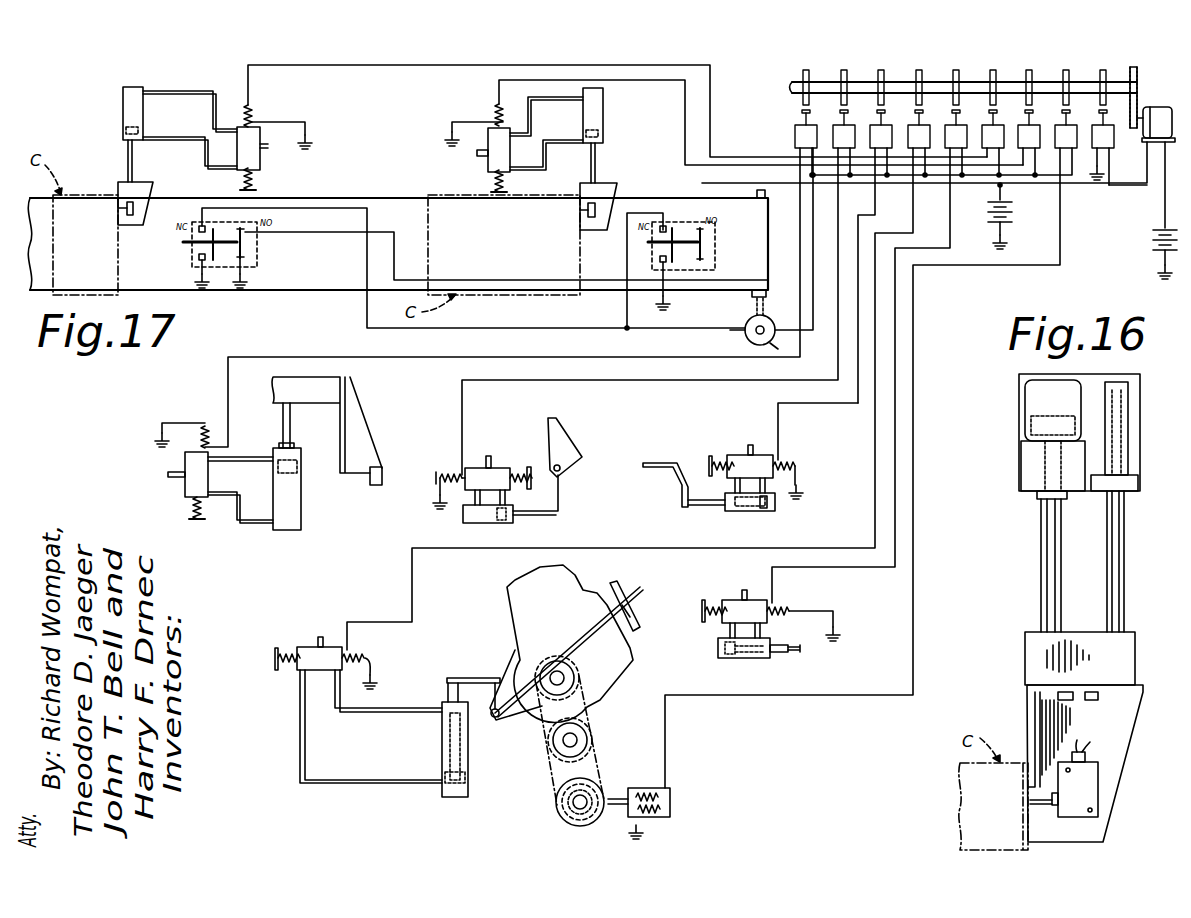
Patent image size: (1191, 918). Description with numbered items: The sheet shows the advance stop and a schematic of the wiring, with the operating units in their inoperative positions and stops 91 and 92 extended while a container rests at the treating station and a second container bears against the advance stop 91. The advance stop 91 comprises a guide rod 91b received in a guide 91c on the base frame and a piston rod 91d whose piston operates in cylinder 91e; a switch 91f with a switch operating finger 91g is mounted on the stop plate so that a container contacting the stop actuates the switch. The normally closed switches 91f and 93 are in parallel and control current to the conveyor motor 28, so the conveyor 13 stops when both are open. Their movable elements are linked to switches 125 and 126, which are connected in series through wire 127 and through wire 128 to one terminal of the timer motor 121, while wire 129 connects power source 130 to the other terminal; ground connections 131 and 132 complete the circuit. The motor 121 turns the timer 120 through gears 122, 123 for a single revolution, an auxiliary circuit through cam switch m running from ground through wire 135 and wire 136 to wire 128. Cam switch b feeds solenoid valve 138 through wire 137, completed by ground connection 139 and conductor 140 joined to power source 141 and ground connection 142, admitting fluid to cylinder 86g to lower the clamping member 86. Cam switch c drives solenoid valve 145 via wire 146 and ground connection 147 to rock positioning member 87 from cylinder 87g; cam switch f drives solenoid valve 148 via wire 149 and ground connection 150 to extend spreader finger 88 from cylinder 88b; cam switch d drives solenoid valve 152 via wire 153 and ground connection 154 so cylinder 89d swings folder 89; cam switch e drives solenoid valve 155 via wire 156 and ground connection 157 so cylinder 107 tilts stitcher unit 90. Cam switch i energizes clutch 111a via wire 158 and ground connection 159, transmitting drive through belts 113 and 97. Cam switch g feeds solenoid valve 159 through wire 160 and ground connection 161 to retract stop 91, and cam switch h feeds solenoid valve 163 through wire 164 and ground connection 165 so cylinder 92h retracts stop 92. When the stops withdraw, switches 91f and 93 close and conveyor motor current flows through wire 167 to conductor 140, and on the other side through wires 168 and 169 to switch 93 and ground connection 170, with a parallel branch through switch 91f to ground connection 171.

In FIG. 17, the conveyor 13 is at (347, 198).
In FIG. 17, the conveyor motor 28 is at (743, 332).
In FIG. 17, the cover folding and clamping member 86 is at (370, 424).
In FIG. 17, the cylinder 86g is at (302, 487).
In FIG. 17, the folder or positioning member 87 is at (556, 420).
In FIG. 17, the cylinder 87g is at (463, 515).
In FIG. 17, the flange spreader finger 88 is at (802, 654).
In FIG. 17, the cylinder 88b is at (746, 658).
In FIG. 17, the folder 89 is at (659, 464).
In FIG. 17, the cylinder 89d is at (746, 514).
In FIG. 17, the stitcher unit 90 is at (510, 604).
In FIG. 17, the retractable stop 91 is at (123, 182).
In FIG. 16, the retractable stop 91 is at (1027, 715).
In FIG. 16, the guide rod 91b is at (1124, 558).
In FIG. 16, the guide 91c is at (1144, 427).
In FIG. 16, the piston rod 91d is at (1052, 572).
In FIG. 17, the cylinder 91e is at (130, 112).
In FIG. 16, the cylinder 91e is at (1029, 409).
In FIG. 17, the switch 91f is at (137, 202).
In FIG. 16, the switch 91f is at (1092, 783).
In FIG. 16, the switch operating finger 91g is at (1032, 805).
In FIG. 17, the retractable stop 92 is at (578, 221).
In FIG. 17, the cylinder 92h is at (603, 100).
In FIG. 17, the switch 93 is at (688, 223).
In FIG. 17, the transmission belt 97 is at (597, 720).
In FIG. 17, the cylinder 107 is at (440, 751).
In FIG. 17, the single-revolution solenoid-actuated clutch 111a is at (556, 808).
In FIG. 17, the transmission belt 113 is at (600, 770).
In FIG. 17, the timer device 120 is at (792, 84).
In FIG. 17, the motor 121 is at (1150, 144).
In FIG. 17, the gear 122 is at (1137, 79).
In FIG. 17, the gear 123 is at (1140, 108).
In FIG. 17, the switch 125 is at (250, 242).
In FIG. 17, the switch 126 is at (704, 244).
In FIG. 17, the wire 127 is at (517, 276).
In FIG. 17, the wire 128 is at (887, 196).
In FIG. 17, the wire 129 is at (1165, 205).
In FIG. 17, the power source 130 is at (1154, 245).
In FIG. 17, the ground connection 131 is at (1158, 270).
In FIG. 17, the ground connection 132 is at (247, 282).
In FIG. 17, the wire 135 is at (1094, 178).
In FIG. 17, the wire 136 is at (1112, 188).
In FIG. 17, the wire 137 is at (650, 354).
In FIG. 17, the solenoid valve 138 is at (210, 472).
In FIG. 17, the ground connection 139 is at (185, 405).
In FIG. 17, the conductor 140 is at (986, 196).
In FIG. 17, the power source 141 is at (1012, 212).
In FIG. 17, the ground connection 142 is at (994, 242).
In FIG. 17, the solenoid valve 145 is at (493, 466).
In FIG. 17, the wire 146 is at (683, 380).
In FIG. 17, the ground connection 147 is at (440, 484).
In FIG. 17, the solenoid valve 148 is at (730, 600).
In FIG. 17, the wire 149 is at (863, 568).
In FIG. 17, the ground connection 150 is at (838, 621).
In FIG. 17, the solenoid valve 152 is at (737, 456).
In FIG. 17, the wire 153 is at (802, 410).
In FIG. 17, the ground connection 154 is at (805, 482).
In FIG. 17, the solenoid valve 155 is at (305, 645).
In FIG. 17, the wire 156 is at (874, 515).
In FIG. 17, the ground connection 157 is at (377, 670).
In FIG. 17, the wire 158 is at (916, 375).
In FIG. 17, the solenoid valve 159 is at (260, 158).
In FIG. 17, the wire 160 is at (390, 65).
In FIG. 17, the ground connection 161 is at (328, 122).
In FIG. 17, the solenoid valve 163 is at (488, 161).
In FIG. 17, the wire 164 is at (490, 86).
In FIG. 17, the ground connection 165 is at (450, 125).
In FIG. 17, the wire 167 is at (808, 348).
In FIG. 17, the wire 168 is at (500, 333).
In FIG. 17, the wire 169 is at (627, 320).
In FIG. 17, the ground connection 170 is at (673, 303).
In FIG. 17, the ground connection 171 is at (200, 281).